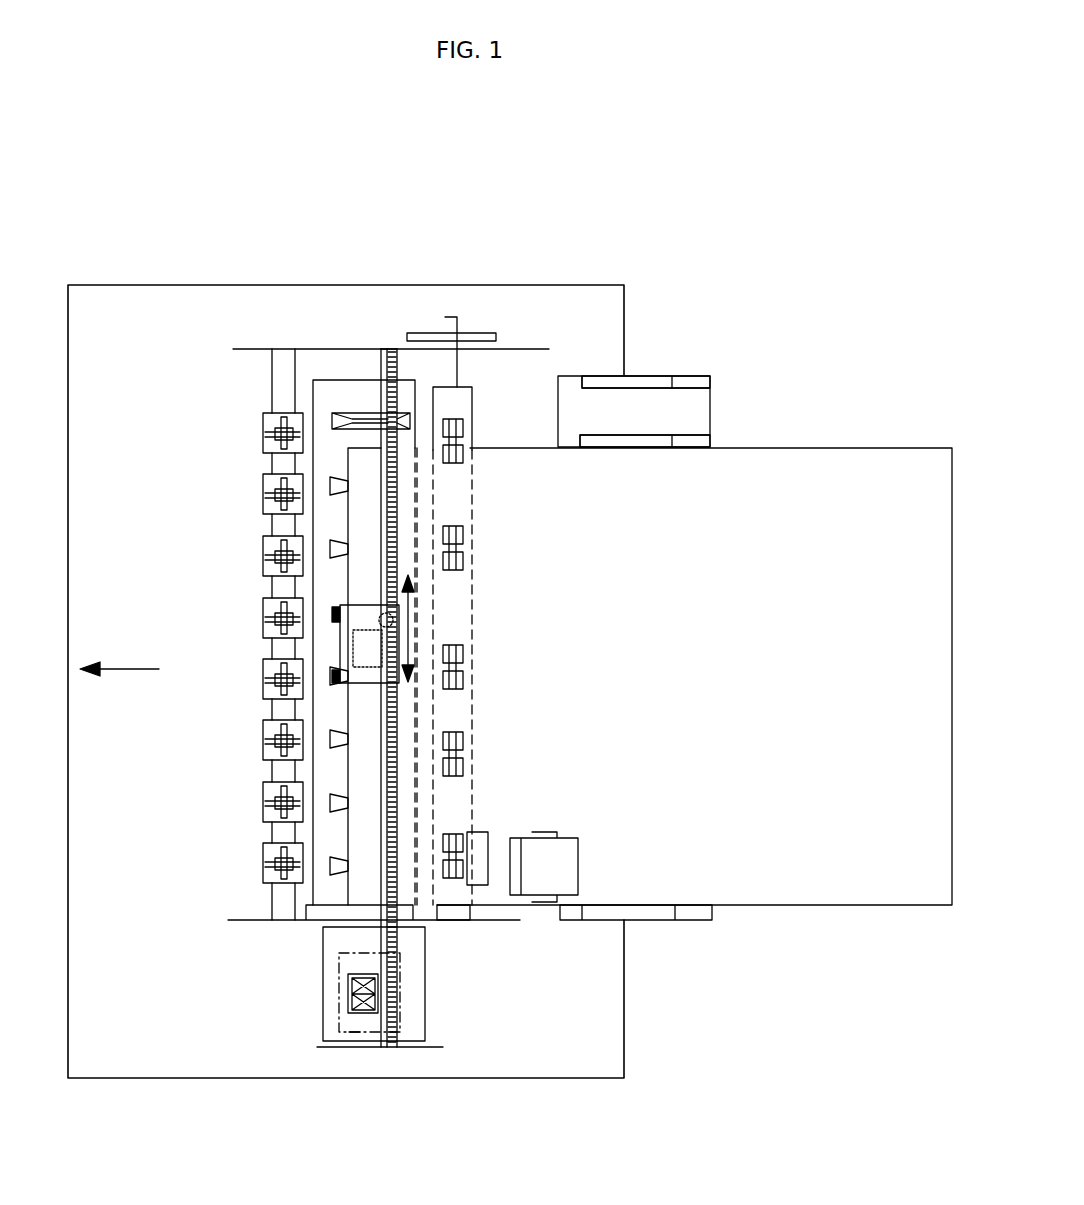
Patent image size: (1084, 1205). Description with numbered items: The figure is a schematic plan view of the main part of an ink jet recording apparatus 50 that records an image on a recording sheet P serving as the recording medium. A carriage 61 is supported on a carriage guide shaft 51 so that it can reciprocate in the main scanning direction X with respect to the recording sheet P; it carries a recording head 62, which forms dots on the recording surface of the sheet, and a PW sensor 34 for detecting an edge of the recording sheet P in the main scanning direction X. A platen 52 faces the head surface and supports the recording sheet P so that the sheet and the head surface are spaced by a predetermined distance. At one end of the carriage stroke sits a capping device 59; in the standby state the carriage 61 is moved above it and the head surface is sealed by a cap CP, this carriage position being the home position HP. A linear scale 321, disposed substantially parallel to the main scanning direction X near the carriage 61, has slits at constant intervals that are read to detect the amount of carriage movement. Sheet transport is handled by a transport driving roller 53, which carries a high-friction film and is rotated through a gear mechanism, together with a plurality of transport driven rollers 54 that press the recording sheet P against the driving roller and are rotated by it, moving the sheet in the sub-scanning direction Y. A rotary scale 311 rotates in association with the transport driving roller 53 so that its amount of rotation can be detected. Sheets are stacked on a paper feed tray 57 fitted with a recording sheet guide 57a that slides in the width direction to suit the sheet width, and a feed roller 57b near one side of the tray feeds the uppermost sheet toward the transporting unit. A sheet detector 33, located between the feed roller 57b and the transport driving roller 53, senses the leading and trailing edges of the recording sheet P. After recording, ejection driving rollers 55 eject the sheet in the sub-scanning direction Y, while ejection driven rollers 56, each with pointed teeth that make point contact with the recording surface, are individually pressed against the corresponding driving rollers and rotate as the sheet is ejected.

The ink jet recording apparatus 50 is at (588, 258).
The rotary scale 311 is at (487, 333).
The linear scale 321 is at (400, 368).
The carriage guide shaft 51 is at (378, 362).
The platen 52 is at (333, 388).
The transport driving roller 53 is at (473, 410).
The transport driven rollers 54 is at (465, 432).
The ejection driving rollers 55 is at (265, 420).
The ejection driven rollers 56 is at (270, 437).
The paper feed tray 57 is at (698, 377).
The recording sheet guide 57a is at (690, 440).
The feed roller 57b is at (548, 880).
The carriage 61 is at (352, 606).
The recording head 62 is at (370, 645).
The PW sensor 34 is at (393, 604).
The sheet detector 33 is at (481, 878).
The capping device 59 is at (322, 1010).
The cap CP is at (350, 980).
The home position HP is at (352, 1040).
The recording sheet P is at (823, 450).
The main scanning direction X is at (415, 628).
The sub-scanning direction Y is at (129, 670).